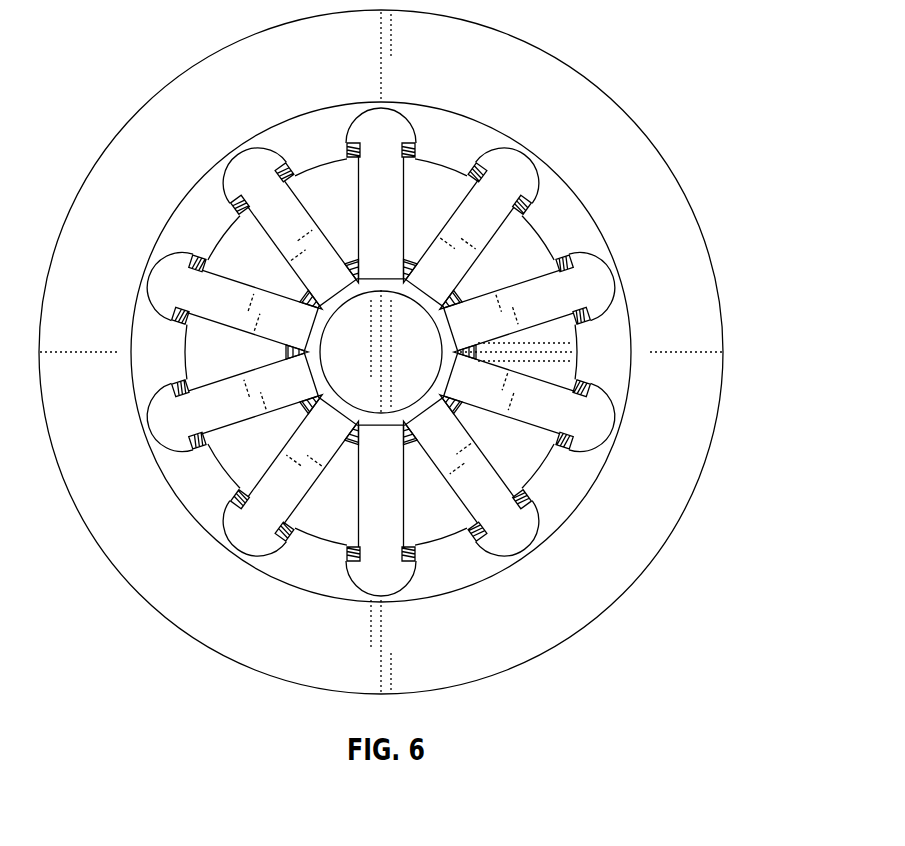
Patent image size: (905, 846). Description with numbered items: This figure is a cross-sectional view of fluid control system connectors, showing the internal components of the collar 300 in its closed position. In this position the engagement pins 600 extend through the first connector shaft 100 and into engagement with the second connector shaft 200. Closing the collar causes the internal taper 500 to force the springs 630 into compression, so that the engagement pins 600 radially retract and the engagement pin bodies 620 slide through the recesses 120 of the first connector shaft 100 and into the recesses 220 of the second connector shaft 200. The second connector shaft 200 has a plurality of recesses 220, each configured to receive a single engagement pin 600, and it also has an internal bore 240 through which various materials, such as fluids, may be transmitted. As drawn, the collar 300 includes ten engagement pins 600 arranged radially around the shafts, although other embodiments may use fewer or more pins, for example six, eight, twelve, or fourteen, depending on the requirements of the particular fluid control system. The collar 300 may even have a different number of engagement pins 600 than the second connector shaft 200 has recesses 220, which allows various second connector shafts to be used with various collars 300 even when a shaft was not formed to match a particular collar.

The first connector shaft 100 is at (580, 342).
The recesses 120 is at (300, 172).
The second connector shaft 200 is at (410, 412).
The recesses 220 is at (412, 272).
The internal bore 240 is at (357, 393).
The collar 300 is at (497, 31).
The internal taper 500 is at (590, 253).
The engagement pins 600 is at (518, 178).
The engagement pin bodies 620 is at (530, 412).
The springs 630 is at (417, 150).